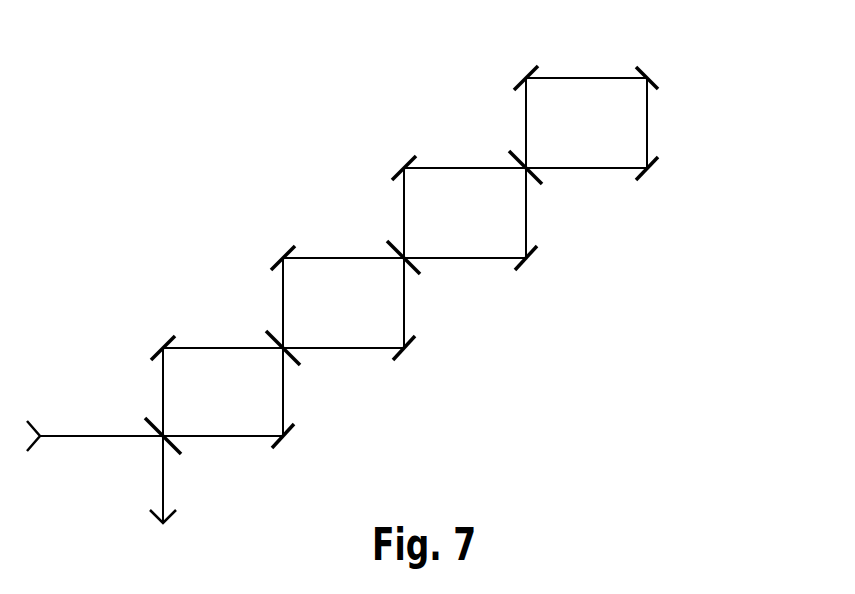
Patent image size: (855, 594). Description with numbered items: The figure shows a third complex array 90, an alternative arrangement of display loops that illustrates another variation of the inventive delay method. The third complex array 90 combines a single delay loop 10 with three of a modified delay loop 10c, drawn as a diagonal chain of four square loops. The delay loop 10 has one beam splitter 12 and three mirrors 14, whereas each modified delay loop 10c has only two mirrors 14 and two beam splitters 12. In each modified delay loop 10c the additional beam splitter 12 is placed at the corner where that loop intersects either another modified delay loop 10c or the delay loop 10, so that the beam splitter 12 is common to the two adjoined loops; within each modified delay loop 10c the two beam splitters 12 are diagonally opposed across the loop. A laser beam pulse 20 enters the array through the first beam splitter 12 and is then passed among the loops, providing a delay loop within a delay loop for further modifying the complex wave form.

The third complex array 90 is at (124, 166).
The delay loop 10 is at (654, 133).
The modified delay loop 10c is at (218, 343).
The beam splitter 12 is at (177, 450).
The highly reflective mirror 14 is at (153, 352).
The laser beam pulse 20 is at (82, 438).